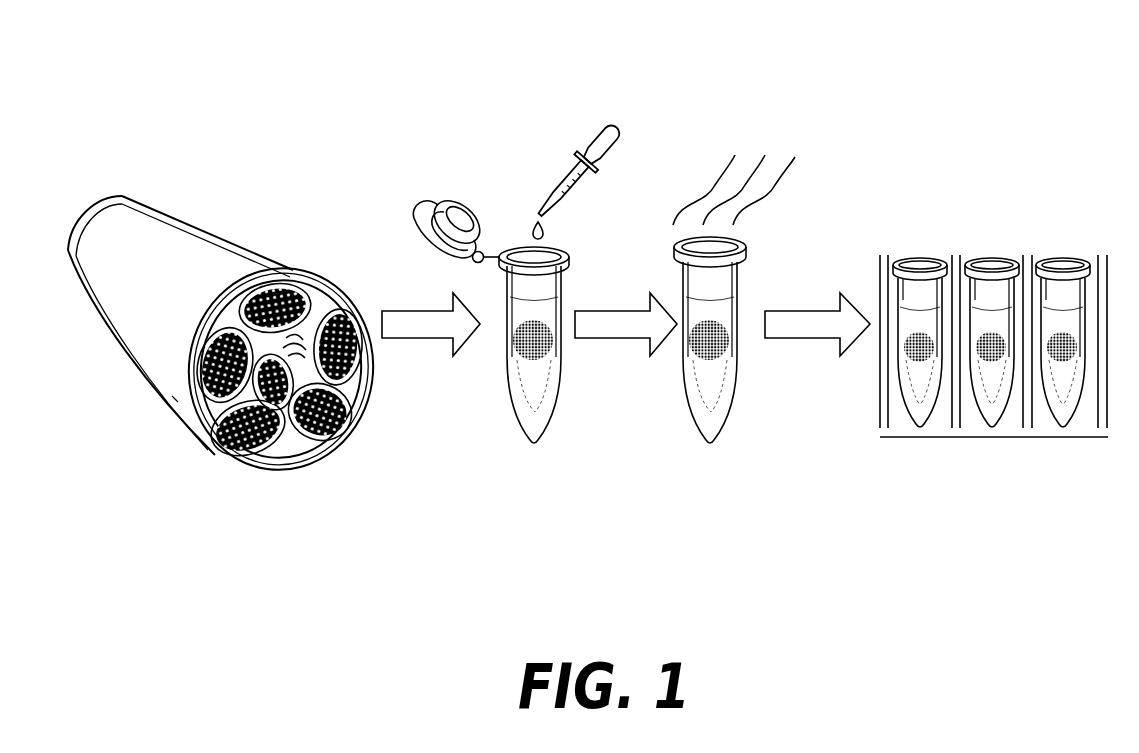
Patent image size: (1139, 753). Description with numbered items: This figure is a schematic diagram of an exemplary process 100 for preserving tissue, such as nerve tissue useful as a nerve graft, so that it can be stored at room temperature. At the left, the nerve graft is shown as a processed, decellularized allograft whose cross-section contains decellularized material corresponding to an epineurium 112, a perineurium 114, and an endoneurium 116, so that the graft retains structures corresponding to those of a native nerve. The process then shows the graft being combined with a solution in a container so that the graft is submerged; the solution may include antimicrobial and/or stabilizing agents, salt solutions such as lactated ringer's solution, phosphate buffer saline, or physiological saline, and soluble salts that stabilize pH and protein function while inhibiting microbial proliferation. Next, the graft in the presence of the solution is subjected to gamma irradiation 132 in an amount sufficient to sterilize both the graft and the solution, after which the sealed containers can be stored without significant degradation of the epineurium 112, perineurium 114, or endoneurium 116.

The process 100 is at (232, 34).
The epineurium 112 is at (197, 444).
The perineurium 114 is at (247, 455).
The endoneurium 116 is at (275, 453).
The gamma irradiation 132 is at (752, 120).